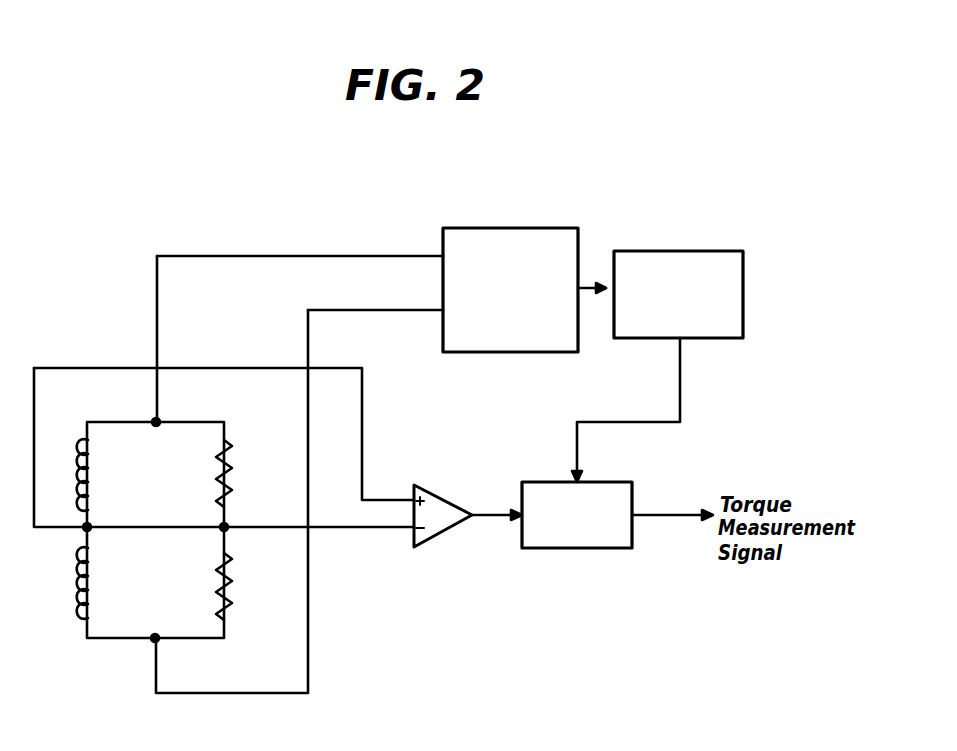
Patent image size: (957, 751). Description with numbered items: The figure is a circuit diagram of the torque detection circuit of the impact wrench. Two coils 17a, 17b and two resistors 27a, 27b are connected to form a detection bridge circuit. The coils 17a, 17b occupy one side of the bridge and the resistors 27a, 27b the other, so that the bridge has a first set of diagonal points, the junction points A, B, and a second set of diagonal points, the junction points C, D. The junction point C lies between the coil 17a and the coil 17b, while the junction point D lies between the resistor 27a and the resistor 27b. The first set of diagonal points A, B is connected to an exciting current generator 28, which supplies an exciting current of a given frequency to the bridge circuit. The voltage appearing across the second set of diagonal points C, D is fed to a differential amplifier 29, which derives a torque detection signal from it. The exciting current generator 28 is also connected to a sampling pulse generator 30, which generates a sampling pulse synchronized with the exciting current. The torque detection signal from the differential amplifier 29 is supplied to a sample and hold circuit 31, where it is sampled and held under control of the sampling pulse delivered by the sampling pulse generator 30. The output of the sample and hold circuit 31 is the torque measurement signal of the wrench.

The coil 17a is at (92, 480).
The coil 17b is at (93, 584).
The resistor 27a is at (217, 476).
The resistor 27b is at (217, 582).
The exciting current generator 28 is at (520, 228).
The differential amplifier 29 is at (447, 500).
The sampling pulse generator 30 is at (675, 251).
The sample and hold circuit 31 is at (617, 482).
The junction point A is at (156, 422).
The junction point B is at (155, 638).
The junction point C is at (87, 527).
The junction point D is at (224, 527).